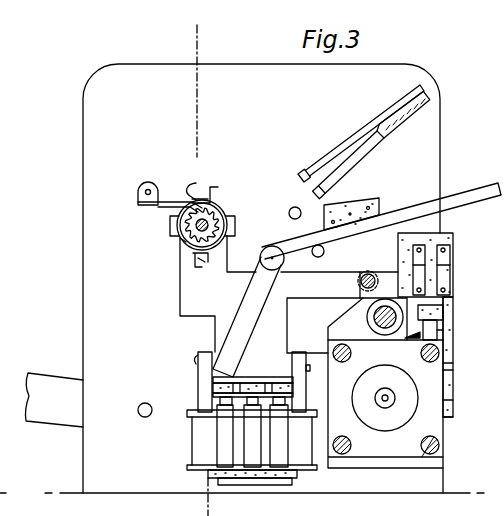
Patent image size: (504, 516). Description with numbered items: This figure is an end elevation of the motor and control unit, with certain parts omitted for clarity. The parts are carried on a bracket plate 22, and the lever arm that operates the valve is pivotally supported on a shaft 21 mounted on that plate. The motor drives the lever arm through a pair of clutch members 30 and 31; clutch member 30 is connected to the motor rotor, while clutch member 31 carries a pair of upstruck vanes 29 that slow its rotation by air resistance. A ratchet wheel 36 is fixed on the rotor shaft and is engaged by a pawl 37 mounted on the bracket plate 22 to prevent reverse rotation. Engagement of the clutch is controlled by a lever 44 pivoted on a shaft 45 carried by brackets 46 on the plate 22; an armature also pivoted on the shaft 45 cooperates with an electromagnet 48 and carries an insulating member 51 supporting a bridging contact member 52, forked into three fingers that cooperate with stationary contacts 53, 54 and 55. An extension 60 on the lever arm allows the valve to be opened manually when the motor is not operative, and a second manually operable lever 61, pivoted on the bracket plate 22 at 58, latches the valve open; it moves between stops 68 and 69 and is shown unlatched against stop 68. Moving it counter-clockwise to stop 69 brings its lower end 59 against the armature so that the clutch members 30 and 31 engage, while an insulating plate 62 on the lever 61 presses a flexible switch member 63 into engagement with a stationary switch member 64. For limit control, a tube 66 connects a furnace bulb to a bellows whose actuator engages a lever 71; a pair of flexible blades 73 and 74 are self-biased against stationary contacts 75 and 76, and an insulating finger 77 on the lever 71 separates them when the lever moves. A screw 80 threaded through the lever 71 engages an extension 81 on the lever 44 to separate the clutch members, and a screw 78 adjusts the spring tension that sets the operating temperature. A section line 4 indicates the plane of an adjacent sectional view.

The section line 4- 4 is at (195, 36).
The shaft 21 is at (143, 417).
The bracket plate 22 is at (83, 447).
The upstruck vanes 29 is at (205, 274).
The clutch member 30 is at (233, 222).
The clutch member 31 is at (160, 276).
The ratchet wheel 36 is at (181, 239).
The pawl 37 is at (170, 202).
The lever 44 is at (187, 298).
The shaft 45 is at (199, 366).
The brackets 46 is at (209, 382).
The electromagnet 48 is at (192, 442).
The insulating member 51 is at (217, 388).
The bridging contact member 52 is at (218, 378).
The stationary contact 53 is at (232, 440).
The stationary contact 54 is at (260, 440).
The stationary contact 55 is at (288, 440).
The pivot 58 is at (260, 254).
The lower end 59 is at (245, 351).
The extension 60 is at (50, 378).
The manually operable lever 61 is at (405, 210).
The insulating plate 62 is at (358, 205).
The flexible switch member 63 is at (362, 151).
The stationary switch member 64 is at (338, 147).
The tube 66 is at (387, 392).
The stop 68 is at (313, 258).
The stop 69 is at (294, 207).
The lever 71 is at (362, 302).
The flexible blade 73 is at (423, 326).
The flexible blade 74 is at (443, 337).
The stationary contact 75 is at (424, 273).
The stationary contact 76 is at (446, 282).
The finger 77 is at (448, 312).
The screw 78 is at (368, 322).
The screw 80 is at (371, 273).
The extension 81 is at (332, 279).